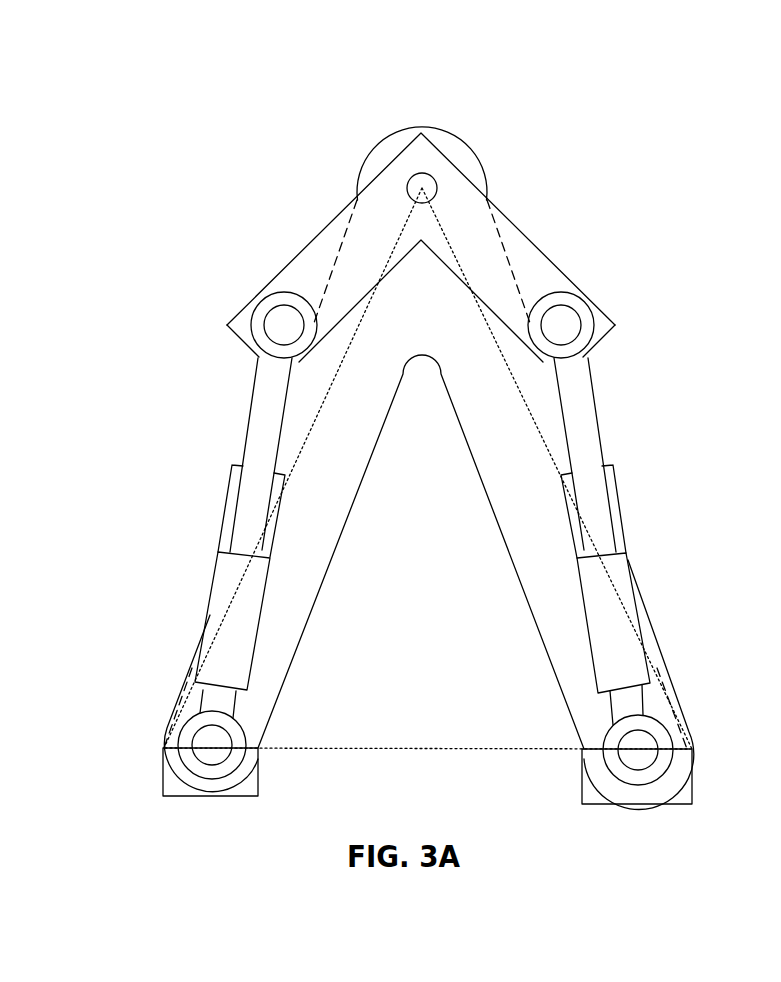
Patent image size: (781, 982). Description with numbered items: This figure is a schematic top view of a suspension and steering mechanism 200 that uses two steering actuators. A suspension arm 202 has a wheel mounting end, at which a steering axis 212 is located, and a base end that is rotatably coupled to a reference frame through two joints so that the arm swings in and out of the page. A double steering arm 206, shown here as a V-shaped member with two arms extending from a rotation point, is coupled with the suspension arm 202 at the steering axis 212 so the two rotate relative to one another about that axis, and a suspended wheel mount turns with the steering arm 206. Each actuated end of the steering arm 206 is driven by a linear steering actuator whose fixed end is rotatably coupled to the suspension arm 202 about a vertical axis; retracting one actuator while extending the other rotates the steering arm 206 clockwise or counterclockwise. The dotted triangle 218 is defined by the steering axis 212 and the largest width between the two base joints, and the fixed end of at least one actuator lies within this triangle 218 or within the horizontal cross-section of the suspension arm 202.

The suspension and steering mechanism 200 is at (328, 140).
The suspension arm 202 is at (328, 576).
The steering arm 206 is at (290, 262).
The steering axis 212 is at (433, 181).
The triangle 218 is at (547, 443).